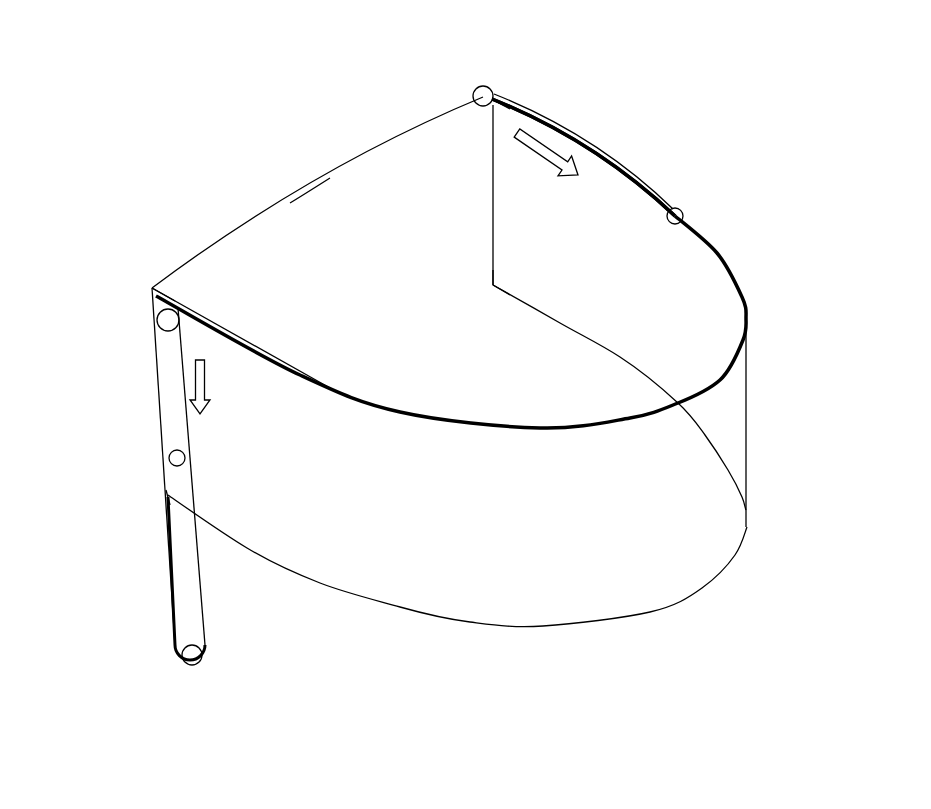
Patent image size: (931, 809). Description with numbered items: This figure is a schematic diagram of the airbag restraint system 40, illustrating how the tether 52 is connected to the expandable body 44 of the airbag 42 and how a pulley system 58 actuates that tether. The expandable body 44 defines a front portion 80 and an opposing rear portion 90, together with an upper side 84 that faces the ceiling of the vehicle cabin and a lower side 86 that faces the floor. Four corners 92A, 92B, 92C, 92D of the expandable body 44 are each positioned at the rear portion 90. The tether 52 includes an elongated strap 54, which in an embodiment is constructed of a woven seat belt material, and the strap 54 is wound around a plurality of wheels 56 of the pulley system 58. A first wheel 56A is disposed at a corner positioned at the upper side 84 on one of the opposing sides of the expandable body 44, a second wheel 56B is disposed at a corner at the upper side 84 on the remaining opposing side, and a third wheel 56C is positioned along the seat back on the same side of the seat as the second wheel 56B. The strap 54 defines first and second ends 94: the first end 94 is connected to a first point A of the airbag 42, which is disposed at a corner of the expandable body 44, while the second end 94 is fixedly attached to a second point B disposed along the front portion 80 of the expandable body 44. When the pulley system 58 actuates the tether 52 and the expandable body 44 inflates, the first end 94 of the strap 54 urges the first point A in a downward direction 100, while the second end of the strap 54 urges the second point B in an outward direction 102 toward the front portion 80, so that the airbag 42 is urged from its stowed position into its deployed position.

The headwear assembly 40 is at (728, 192).
The airbag 42 is at (749, 366).
The expandable body 44 is at (571, 519).
The tether 52 is at (330, 169).
The strap 54 is at (309, 193).
The wheels 56 is at (433, 51).
The first wheel 56A is at (483, 91).
The second wheel 56B is at (155, 313).
The third wheel 56C is at (200, 657).
The pulley system 58 is at (495, 73).
The front portion 80 is at (758, 435).
The upper side 84 is at (599, 124).
The lower side 86 is at (640, 622).
The rear portion 90 is at (480, 220).
The corner 92A is at (498, 87).
The corner 92B is at (158, 285).
The corner 92C is at (499, 277).
The corner 92D is at (174, 492).
The first and second ends 94 is at (650, 206).
The downward direction 100 is at (204, 378).
The outward direction 102 is at (545, 153).
The first point A is at (171, 457).
The second point B is at (669, 224).